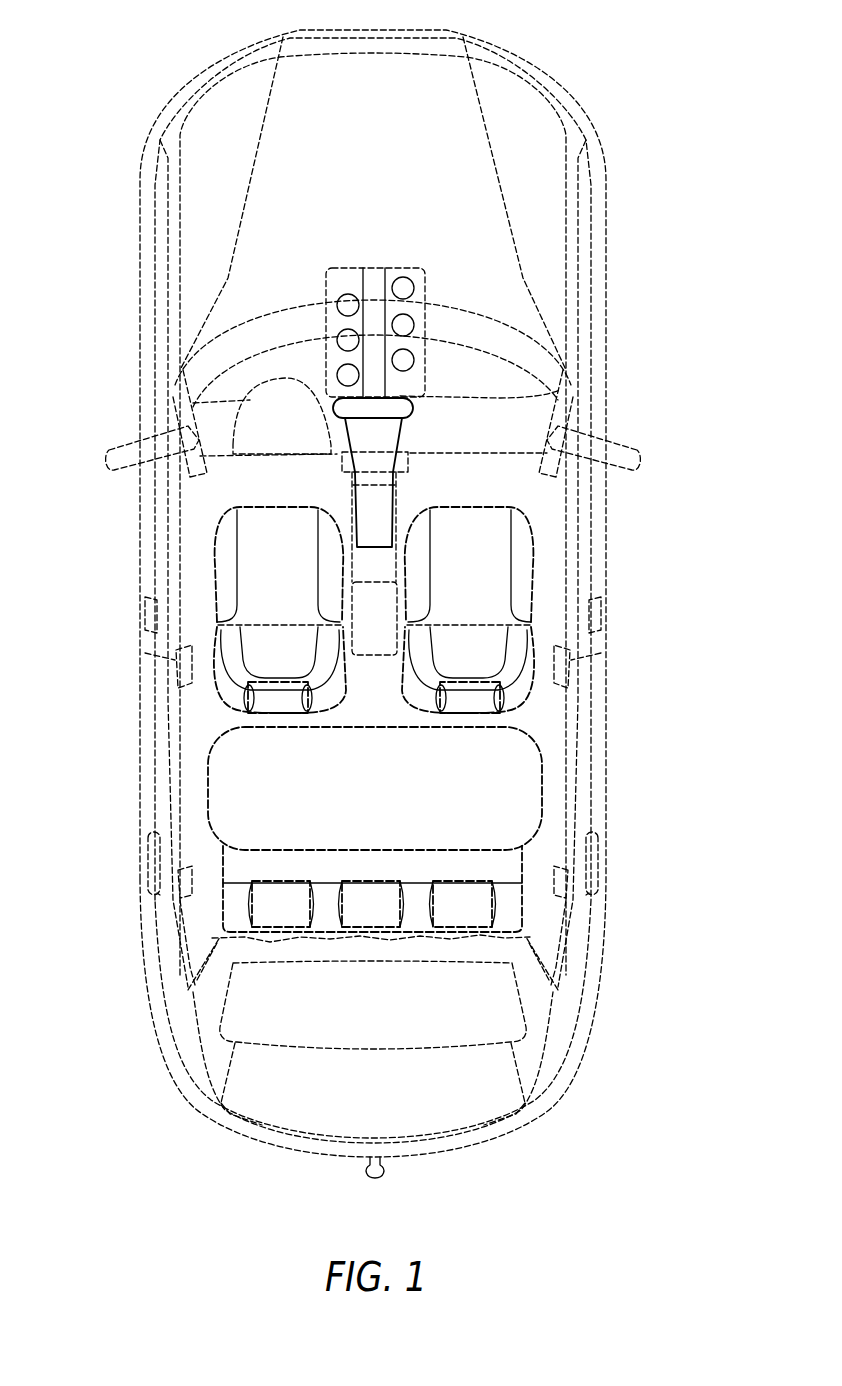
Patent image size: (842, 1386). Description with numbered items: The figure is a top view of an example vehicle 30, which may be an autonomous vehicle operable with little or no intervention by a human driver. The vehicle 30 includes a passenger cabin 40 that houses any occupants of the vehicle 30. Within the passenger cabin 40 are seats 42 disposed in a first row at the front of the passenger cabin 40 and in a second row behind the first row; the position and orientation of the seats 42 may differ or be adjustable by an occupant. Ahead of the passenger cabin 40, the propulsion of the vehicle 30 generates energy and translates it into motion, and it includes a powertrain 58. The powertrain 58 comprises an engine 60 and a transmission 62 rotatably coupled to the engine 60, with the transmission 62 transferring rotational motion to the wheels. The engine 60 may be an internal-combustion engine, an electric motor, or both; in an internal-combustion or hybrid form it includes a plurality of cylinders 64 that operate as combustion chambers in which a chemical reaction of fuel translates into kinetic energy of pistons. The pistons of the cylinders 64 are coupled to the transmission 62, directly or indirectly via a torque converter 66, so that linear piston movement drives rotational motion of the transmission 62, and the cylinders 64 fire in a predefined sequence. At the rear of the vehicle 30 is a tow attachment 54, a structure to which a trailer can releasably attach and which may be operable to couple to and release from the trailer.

The vehicle 30 is at (68, 67).
The passenger cabin 40 is at (575, 720).
The seats 42 is at (213, 583).
The tow attachment 54 is at (382, 1172).
The powertrain 58 is at (710, 310).
The engine 60 is at (425, 377).
The transmission 62 is at (403, 438).
The cylinders 64 is at (337, 375).
The torque converter 66 is at (413, 407).